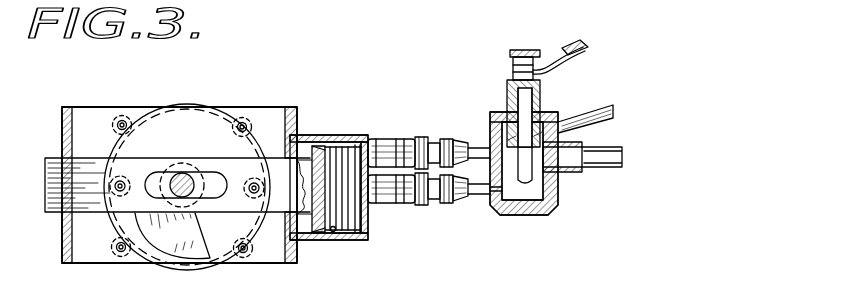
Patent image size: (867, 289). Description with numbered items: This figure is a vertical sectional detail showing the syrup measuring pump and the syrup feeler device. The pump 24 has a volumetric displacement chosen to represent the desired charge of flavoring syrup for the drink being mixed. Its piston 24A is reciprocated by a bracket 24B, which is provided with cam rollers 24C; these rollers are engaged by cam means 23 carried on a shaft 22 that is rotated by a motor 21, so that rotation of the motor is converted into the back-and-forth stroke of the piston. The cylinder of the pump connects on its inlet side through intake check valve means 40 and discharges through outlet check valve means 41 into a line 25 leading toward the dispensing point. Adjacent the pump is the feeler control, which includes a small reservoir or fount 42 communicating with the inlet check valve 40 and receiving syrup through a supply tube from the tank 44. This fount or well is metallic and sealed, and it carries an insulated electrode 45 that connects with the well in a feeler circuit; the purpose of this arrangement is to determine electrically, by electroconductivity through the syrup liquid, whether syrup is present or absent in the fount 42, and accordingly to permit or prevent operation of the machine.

The motor 21 is at (195, 103).
The shaft 22 is at (184, 177).
The cam means 23 is at (188, 243).
The pump 24 is at (305, 135).
The piston 24A is at (338, 222).
The bracket 24B is at (234, 165).
The cam rollers 24C is at (187, 187).
The line 25 is at (677, 97).
The intake check valve means 40 is at (388, 204).
The outlet check valve means 41 is at (380, 139).
The fount 42 is at (491, 135).
The tank 44 is at (633, 160).
The electrode 45 is at (524, 172).